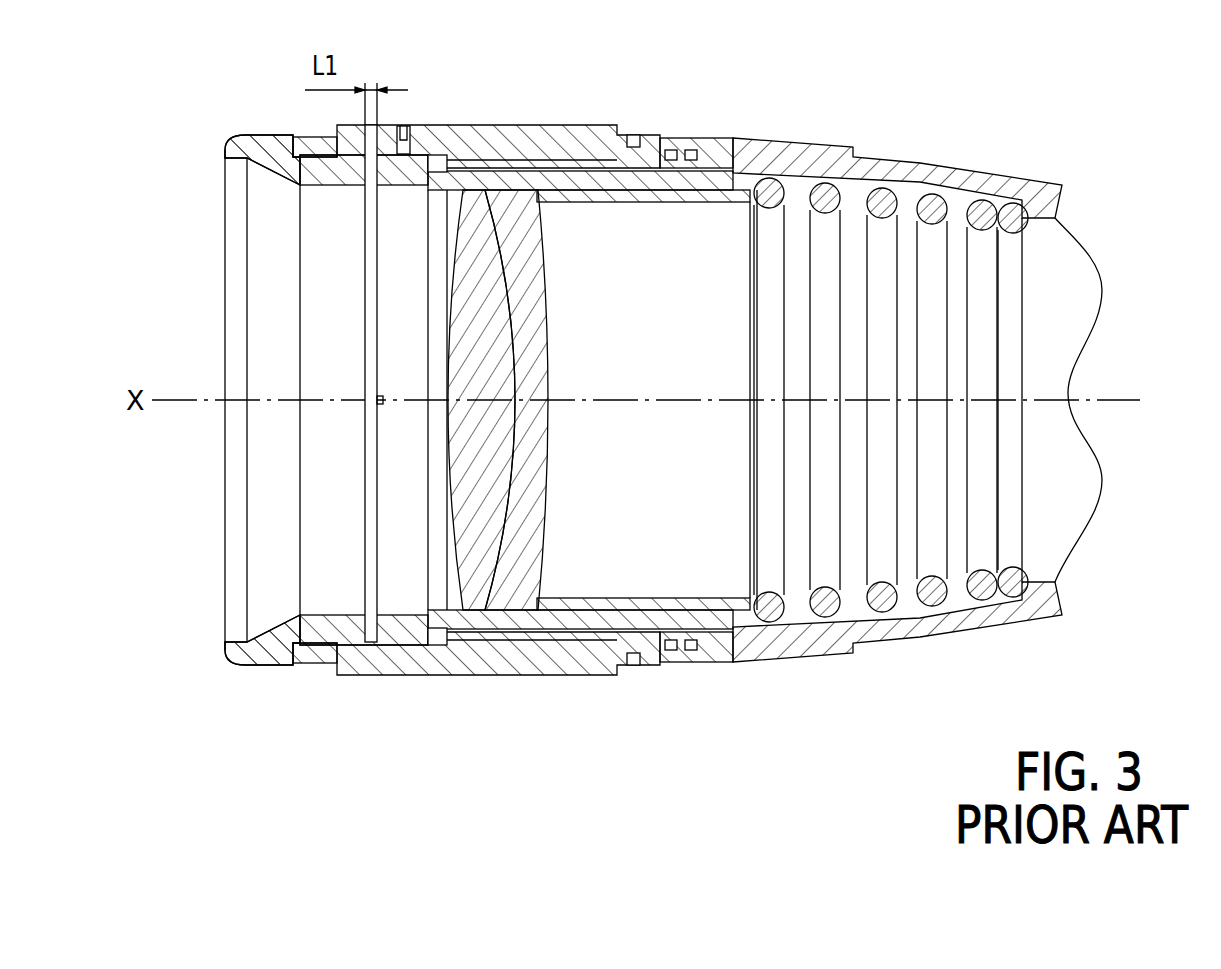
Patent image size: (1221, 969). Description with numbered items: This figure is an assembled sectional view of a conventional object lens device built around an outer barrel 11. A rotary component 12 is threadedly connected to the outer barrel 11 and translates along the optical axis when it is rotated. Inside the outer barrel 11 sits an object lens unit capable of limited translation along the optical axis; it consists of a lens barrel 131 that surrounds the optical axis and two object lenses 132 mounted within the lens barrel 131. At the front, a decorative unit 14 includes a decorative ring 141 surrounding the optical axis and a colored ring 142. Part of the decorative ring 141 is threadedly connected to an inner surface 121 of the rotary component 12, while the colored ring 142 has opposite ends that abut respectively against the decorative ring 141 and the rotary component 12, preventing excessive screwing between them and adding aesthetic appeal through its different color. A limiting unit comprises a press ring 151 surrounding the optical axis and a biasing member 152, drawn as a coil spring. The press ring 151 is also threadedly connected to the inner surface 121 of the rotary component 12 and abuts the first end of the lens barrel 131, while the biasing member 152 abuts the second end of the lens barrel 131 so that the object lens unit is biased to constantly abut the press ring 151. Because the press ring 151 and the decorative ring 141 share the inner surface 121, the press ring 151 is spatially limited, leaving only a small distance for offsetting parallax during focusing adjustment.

The outer barrel 11 is at (912, 660).
The rotary component 12 is at (497, 116).
The inner surface 121 is at (463, 130).
The lens barrel 131 is at (653, 620).
The object lenses 132 is at (515, 563).
The decorative unit 14 is at (262, 120).
The decorative ring 141 is at (258, 665).
The colored ring 142 is at (312, 663).
The press ring 151 is at (403, 640).
The biasing member 152 is at (884, 200).